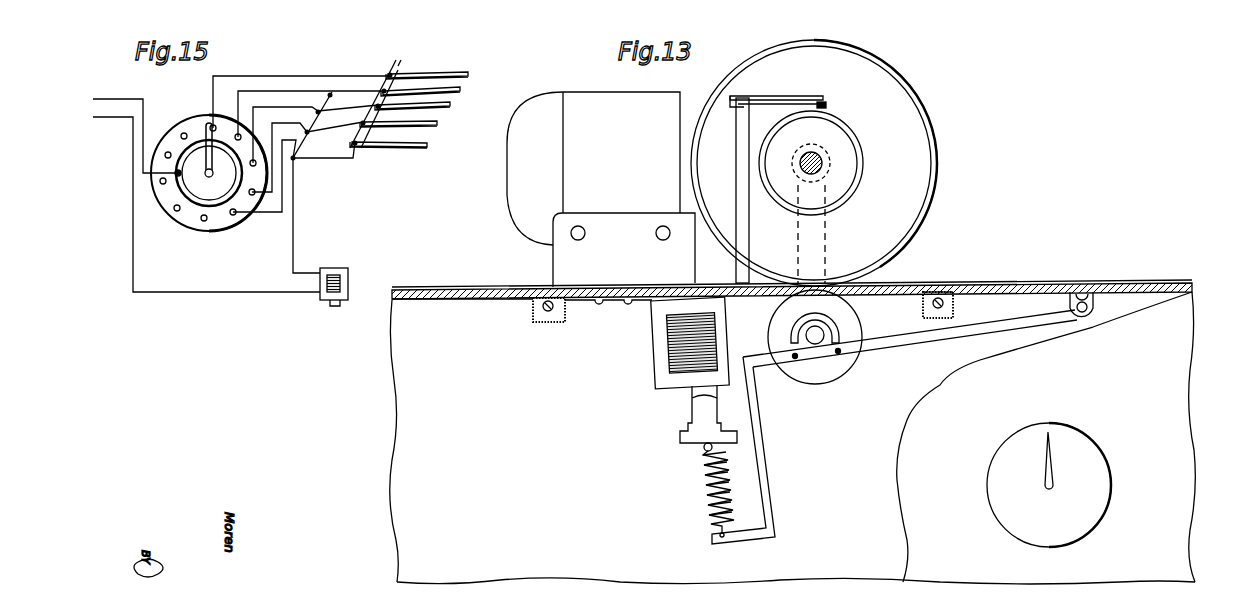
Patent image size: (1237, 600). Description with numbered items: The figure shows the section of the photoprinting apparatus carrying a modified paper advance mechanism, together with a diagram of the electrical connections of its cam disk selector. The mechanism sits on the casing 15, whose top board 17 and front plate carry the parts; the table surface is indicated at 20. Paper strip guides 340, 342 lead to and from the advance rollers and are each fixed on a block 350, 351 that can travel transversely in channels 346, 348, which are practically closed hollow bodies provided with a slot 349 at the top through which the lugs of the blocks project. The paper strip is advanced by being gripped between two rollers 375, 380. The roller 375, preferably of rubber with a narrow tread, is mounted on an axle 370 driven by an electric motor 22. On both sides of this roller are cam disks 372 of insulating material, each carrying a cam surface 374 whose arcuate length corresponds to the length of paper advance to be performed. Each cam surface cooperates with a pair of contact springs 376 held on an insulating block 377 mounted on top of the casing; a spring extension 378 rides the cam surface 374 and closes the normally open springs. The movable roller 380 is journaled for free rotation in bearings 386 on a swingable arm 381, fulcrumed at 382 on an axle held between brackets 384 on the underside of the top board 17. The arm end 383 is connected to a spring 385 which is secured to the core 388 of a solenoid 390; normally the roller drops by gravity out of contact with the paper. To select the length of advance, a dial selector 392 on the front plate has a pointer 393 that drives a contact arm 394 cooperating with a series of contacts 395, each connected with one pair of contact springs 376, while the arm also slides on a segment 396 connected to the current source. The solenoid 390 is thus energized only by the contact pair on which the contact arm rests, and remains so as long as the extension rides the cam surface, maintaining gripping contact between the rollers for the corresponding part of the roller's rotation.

In FIG. 13, the casing 15 is at (1185, 450).
In FIG. 13, the top board 17 is at (995, 290).
In FIG. 13, the table top 20 is at (1170, 281).
In FIG. 13, the electric motor 22 is at (593, 104).
In FIG. 13, the paper strip guide 340 is at (948, 284).
In FIG. 13, the paper strip guide 342 is at (503, 286).
In FIG. 13, the channel 346 is at (534, 312).
In FIG. 13, the channel 348 is at (923, 308).
In FIG. 13, the slot 349 is at (937, 292).
In FIG. 13, the block 350 is at (953, 308).
In FIG. 13, the block 351 is at (562, 318).
In FIG. 13, the axle 370 is at (811, 153).
In FIG. 13, the cam disk 372 is at (840, 205).
In FIG. 13, the cam surface 374 is at (864, 153).
In FIG. 13, the roller 375 is at (938, 174).
In FIG. 13, the contact springs 376 is at (824, 99).
In FIG. 15, the contact springs 376 is at (430, 145).
In FIG. 13, the insulating block 377 is at (745, 235).
In FIG. 13, the spring extension 378 is at (827, 107).
In FIG. 15, the spring extension 378 is at (410, 144).
In FIG. 13, the movable roller 380 is at (846, 366).
In FIG. 13, the swingable arm 381 is at (917, 337).
In FIG. 13, the fulcrum 382 is at (1088, 307).
In FIG. 13, the arm end 383 is at (755, 533).
In FIG. 13, the brackets 384 is at (1093, 316).
In FIG. 13, the spring 385 is at (704, 506).
In FIG. 13, the bearings 386 is at (815, 326).
In FIG. 13, the core 388 is at (680, 440).
In FIG. 13, the solenoid 390 is at (657, 372).
In FIG. 15, the solenoid 390 is at (340, 286).
In FIG. 13, the dial selector 392 is at (1110, 488).
In FIG. 13, the pointer 393 is at (1053, 468).
In FIG. 15, the contact arm 394 is at (205, 140).
In FIG. 15, the contacts 395 is at (233, 214).
In FIG. 15, the segment 396 is at (198, 200).